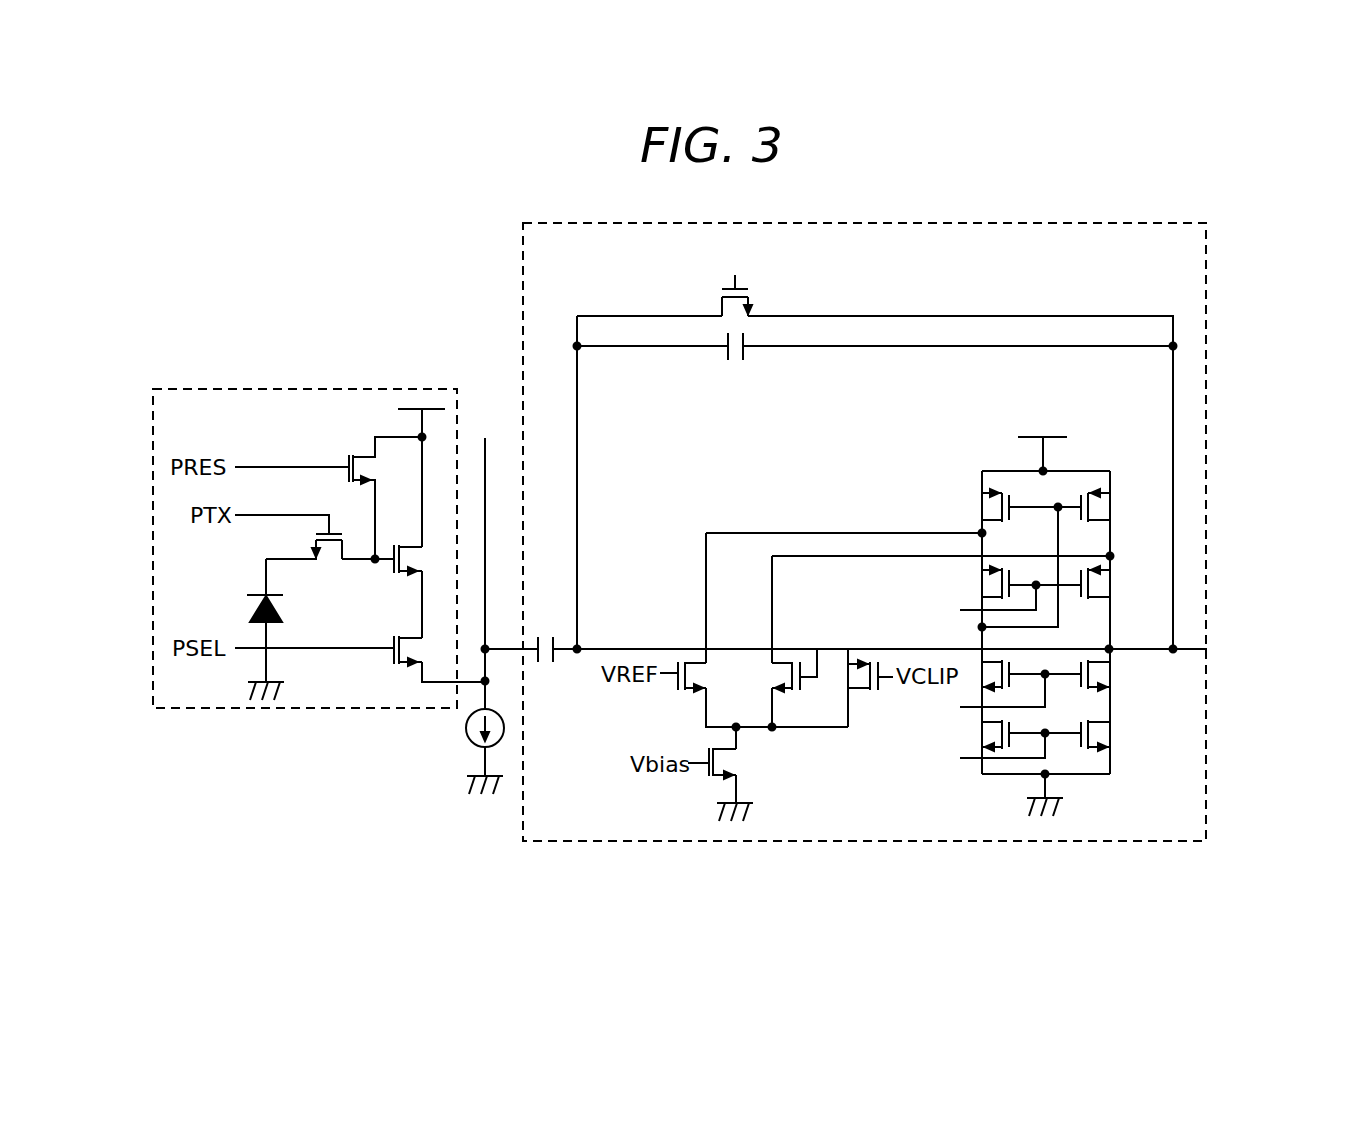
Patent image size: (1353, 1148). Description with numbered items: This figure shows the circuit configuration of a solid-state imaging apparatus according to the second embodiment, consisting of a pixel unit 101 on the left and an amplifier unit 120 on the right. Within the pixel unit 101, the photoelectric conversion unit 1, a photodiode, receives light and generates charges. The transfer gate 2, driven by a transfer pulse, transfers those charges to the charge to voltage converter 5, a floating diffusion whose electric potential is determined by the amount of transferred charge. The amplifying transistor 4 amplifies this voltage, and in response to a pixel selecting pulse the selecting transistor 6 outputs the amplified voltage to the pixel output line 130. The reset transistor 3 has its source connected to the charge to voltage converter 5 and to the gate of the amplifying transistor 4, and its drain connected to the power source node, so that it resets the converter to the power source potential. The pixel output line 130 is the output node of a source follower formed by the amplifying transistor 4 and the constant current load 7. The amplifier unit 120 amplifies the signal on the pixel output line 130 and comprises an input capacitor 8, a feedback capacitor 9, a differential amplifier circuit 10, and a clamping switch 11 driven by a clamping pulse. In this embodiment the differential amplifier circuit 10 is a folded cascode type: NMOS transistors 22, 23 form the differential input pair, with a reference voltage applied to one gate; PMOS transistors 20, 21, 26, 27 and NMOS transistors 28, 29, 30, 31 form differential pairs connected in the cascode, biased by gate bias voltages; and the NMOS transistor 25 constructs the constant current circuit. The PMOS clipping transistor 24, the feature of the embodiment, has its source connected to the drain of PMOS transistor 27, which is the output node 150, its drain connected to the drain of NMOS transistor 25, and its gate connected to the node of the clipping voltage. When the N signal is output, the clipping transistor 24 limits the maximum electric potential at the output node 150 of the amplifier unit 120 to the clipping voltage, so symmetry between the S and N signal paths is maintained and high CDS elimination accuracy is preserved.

The photoelectric conversion unit 1 is at (250, 612).
The transfer gate 2 is at (323, 556).
The reset transistor 3 is at (343, 458).
The amplifying transistor 4 is at (417, 556).
The charge to voltage converter 5 is at (363, 557).
The selecting transistor 6 is at (393, 665).
The constant current load 7 is at (466, 727).
The input capacitor 8 is at (548, 664).
The feedback capacitor 9 is at (746, 352).
The differential amplifier circuit 10 is at (1098, 794).
The clamping switch 11 is at (720, 305).
The PMOS transistor 20 is at (985, 508).
The PMOS transistor 21 is at (1105, 508).
The NMOS transistor 22 is at (677, 690).
The NMOS transistor 23 is at (772, 678).
The PMOS clipping transistor 24 is at (870, 693).
The NMOS transistor 25 is at (738, 763).
The PMOS transistor 26 is at (985, 588).
The PMOS transistor 27 is at (1112, 582).
The NMOS transistor 28 is at (985, 683).
The NMOS transistor 29 is at (1110, 672).
The NMOS transistor 30 is at (982, 738).
The NMOS transistor 31 is at (1112, 735).
The pixel unit 101 is at (402, 388).
The amplifier unit 120 is at (522, 300).
The pixel output line 130 is at (503, 647).
The output node 150 is at (1192, 648).